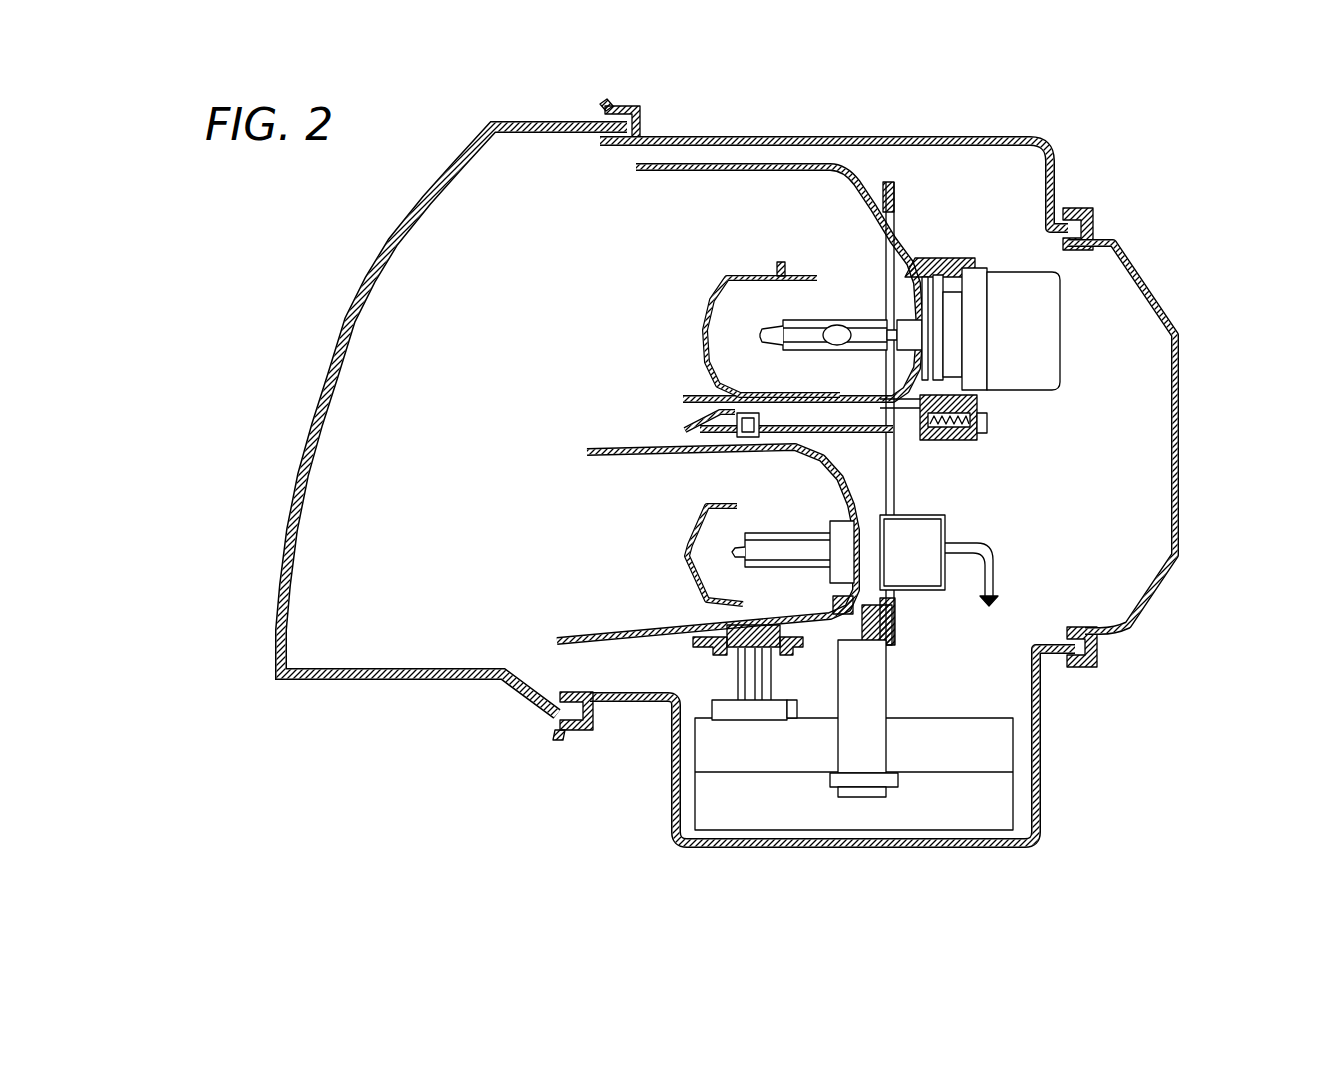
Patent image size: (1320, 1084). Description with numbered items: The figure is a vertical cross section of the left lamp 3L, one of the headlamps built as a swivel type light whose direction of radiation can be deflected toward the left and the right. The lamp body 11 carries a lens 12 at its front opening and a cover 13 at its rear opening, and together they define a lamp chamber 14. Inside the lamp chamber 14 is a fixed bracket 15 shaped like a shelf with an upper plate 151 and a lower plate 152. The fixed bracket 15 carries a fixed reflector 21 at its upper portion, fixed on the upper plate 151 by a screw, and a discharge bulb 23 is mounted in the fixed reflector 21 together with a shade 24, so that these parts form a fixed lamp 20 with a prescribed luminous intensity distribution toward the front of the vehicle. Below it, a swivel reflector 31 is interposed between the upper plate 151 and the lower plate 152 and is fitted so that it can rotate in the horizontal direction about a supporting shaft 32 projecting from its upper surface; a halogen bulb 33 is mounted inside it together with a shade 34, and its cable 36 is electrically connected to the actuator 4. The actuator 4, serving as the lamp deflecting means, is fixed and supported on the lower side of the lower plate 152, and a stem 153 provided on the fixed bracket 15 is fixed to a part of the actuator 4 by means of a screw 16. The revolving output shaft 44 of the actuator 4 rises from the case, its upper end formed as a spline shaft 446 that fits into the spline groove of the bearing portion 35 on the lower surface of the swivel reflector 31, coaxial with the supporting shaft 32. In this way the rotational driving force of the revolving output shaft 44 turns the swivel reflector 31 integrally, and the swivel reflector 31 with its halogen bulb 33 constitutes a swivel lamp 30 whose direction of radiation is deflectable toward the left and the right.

The left lamp 3L is at (1034, 128).
The lamp body 11 is at (1056, 182).
The lens 12 is at (305, 428).
The cover 13 is at (1178, 372).
The lamp chamber 14 is at (358, 650).
The fixed bracket 15 is at (898, 192).
The upper plate 151 is at (905, 455).
The lower plate 152 is at (880, 667).
The stem 153 is at (880, 745).
The screw 16 is at (870, 800).
The fixed lamp 20 is at (692, 162).
The fixed reflector 21 is at (845, 165).
The discharge bulb 23 is at (835, 333).
The shade 24 is at (720, 285).
The swivel lamp 30 is at (548, 658).
The swivel reflector 31 is at (870, 470).
The supporting shaft 32 is at (700, 416).
The halogen bulb 33 is at (775, 545).
The shade 34 is at (688, 545).
The bearing portion 35 is at (710, 650).
The cable 36 is at (985, 578).
The actuator 4 is at (950, 780).
The revolving output shaft 44 is at (790, 690).
The spline shaft 446 is at (715, 680).